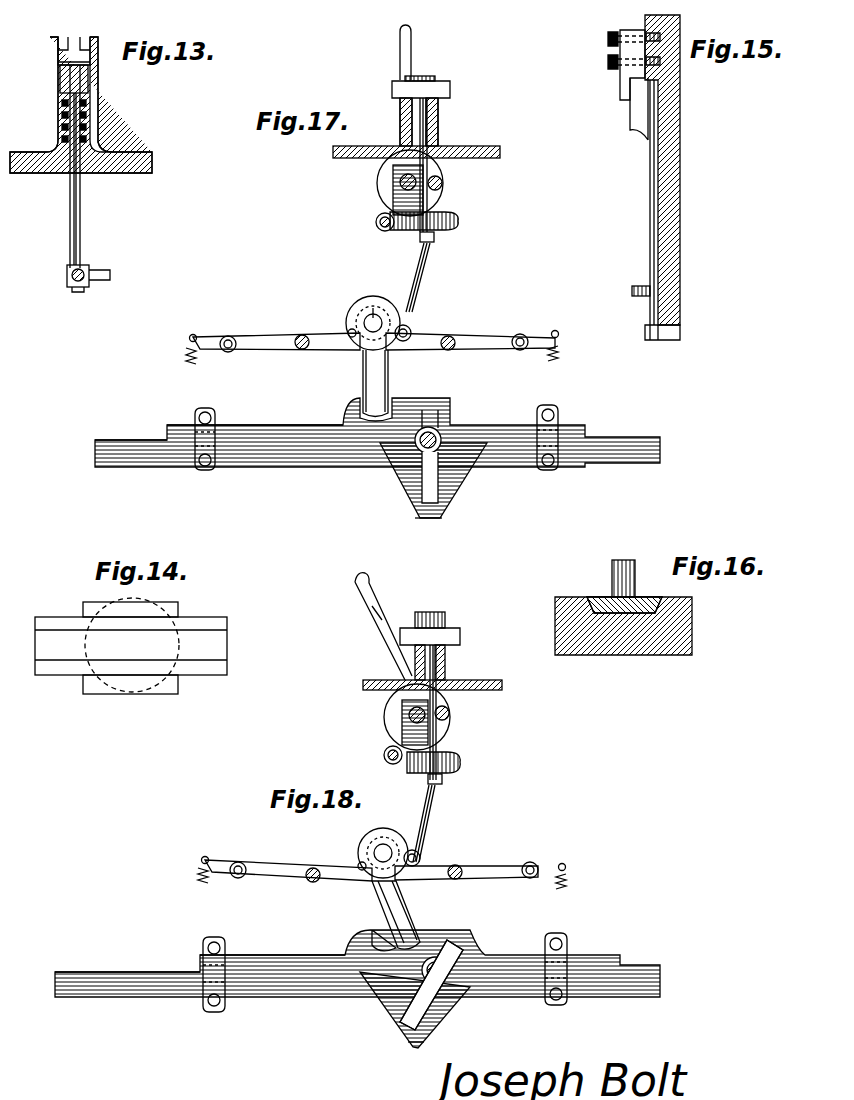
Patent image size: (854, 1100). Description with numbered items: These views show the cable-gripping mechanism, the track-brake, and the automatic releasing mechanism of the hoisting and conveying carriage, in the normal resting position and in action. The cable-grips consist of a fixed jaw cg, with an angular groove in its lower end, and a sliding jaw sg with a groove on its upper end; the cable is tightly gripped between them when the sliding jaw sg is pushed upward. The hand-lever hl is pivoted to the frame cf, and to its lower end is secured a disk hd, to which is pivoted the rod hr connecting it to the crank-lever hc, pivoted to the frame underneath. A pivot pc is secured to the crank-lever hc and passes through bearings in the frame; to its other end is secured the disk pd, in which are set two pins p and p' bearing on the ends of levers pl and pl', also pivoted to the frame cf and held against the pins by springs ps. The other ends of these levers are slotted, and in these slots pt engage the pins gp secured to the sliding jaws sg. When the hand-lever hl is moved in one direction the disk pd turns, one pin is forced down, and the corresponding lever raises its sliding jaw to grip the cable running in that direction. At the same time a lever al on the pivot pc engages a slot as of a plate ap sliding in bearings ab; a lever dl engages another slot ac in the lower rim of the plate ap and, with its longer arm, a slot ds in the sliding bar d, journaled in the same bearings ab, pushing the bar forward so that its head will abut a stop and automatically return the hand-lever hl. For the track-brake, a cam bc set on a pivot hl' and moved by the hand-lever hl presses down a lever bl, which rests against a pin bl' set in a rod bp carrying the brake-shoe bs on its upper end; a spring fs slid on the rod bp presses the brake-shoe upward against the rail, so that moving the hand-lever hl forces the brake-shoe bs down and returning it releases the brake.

In FIG. 13, the brake-shoe bs is at (92, 38).
In FIG. 17, the brake-shoe bs is at (396, 92).
In FIG. 14, the brake-shoe bs is at (195, 630).
In FIG. 18, the brake-shoe bs is at (462, 637).
In FIG. 13, the spring fs is at (86, 117).
In FIG. 13, the frame cf is at (140, 159).
In FIG. 17, the frame cf is at (398, 118).
In FIG. 15, the frame cf is at (680, 212).
In FIG. 14, the frame cf is at (170, 692).
In FIG. 16, the frame cf is at (618, 645).
In FIG. 18, the frame cf is at (432, 667).
In FIG. 13, the rod bp is at (80, 228).
In FIG. 13, the pin bl' is at (103, 278).
In FIG. 17, the pin bl' is at (454, 243).
In FIG. 17, the hand-lever hl is at (424, 52).
In FIG. 18, the hand-lever hl is at (371, 626).
In FIG. 17, the disk hd is at (393, 182).
In FIG. 18, the disk hd is at (404, 722).
In FIG. 17, the pivot hl' is at (371, 204).
In FIG. 18, the pivot hl' is at (376, 707).
In FIG. 17, the cam bc is at (383, 231).
In FIG. 18, the cam bc is at (408, 736).
In FIG. 17, the lever bl is at (439, 218).
In FIG. 18, the lever bl is at (450, 768).
In FIG. 17, the rod hr is at (418, 288).
In FIG. 18, the rod hr is at (428, 832).
In FIG. 17, the disk pd is at (366, 313).
In FIG. 18, the disk pd is at (370, 846).
In FIG. 17, the crank-lever hc is at (388, 302).
In FIG. 18, the crank-lever hc is at (440, 786).
In FIG. 17, the pivot pc is at (370, 326).
In FIG. 18, the pivot pc is at (390, 845).
In FIG. 17, the pin p is at (331, 322).
In FIG. 18, the pin p is at (343, 857).
In FIG. 17, the pin p' is at (425, 322).
In FIG. 18, the pin p' is at (443, 849).
In FIG. 17, the lever pl is at (276, 326).
In FIG. 18, the lever pl is at (288, 888).
In FIG. 17, the lever pl' is at (470, 362).
In FIG. 18, the lever pl' is at (466, 884).
In FIG. 17, the slot pt is at (222, 336).
In FIG. 18, the slot pt is at (245, 865).
In FIG. 17, the pin gp is at (228, 352).
In FIG. 15, the pin gp is at (636, 298).
In FIG. 16, the pin gp is at (622, 560).
In FIG. 18, the pin gp is at (238, 878).
In FIG. 17, the spring ps is at (190, 360).
In FIG. 18, the spring ps is at (198, 876).
In FIG. 17, the slot as is at (366, 405).
In FIG. 18, the slot as is at (392, 930).
In FIG. 17, the lever al is at (388, 380).
In FIG. 18, the lever al is at (410, 905).
In FIG. 17, the sliding bar d is at (298, 452).
In FIG. 18, the sliding bar d is at (275, 990).
In FIG. 17, the plate ap is at (315, 432).
In FIG. 18, the plate ap is at (478, 975).
In FIG. 17, the slot ac is at (443, 432).
In FIG. 18, the slot ac is at (468, 940).
In FIG. 17, the lever dl is at (440, 476).
In FIG. 18, the lever dl is at (424, 1000).
In FIG. 17, the slot ds is at (432, 519).
In FIG. 18, the slot ds is at (416, 1044).
In FIG. 17, the bearings ab is at (212, 432).
In FIG. 18, the bearings ab is at (222, 962).
In FIG. 15, the fixed jaw cg is at (630, 30).
In FIG. 15, the sliding jaw sg is at (656, 214).
In FIG. 16, the sliding jaw sg is at (598, 596).